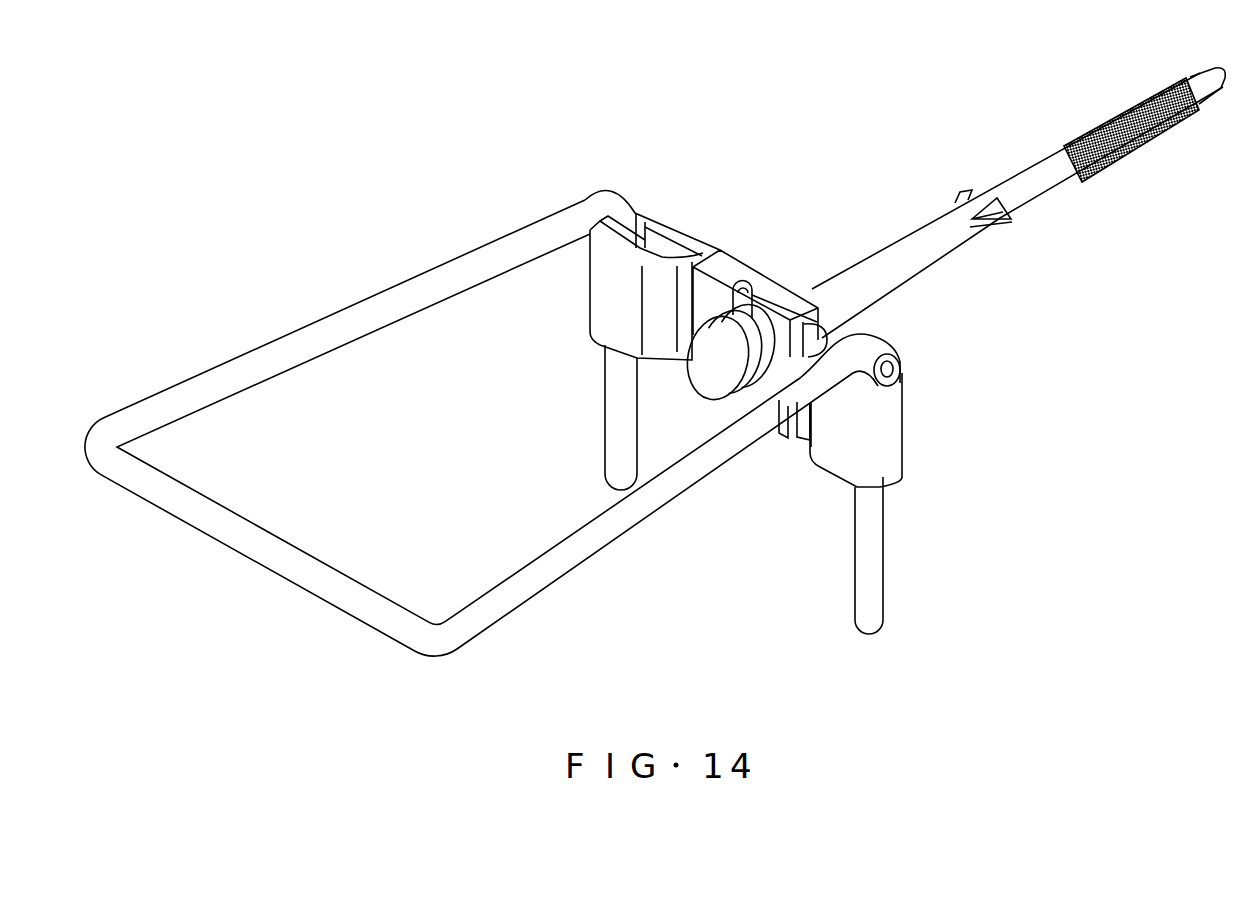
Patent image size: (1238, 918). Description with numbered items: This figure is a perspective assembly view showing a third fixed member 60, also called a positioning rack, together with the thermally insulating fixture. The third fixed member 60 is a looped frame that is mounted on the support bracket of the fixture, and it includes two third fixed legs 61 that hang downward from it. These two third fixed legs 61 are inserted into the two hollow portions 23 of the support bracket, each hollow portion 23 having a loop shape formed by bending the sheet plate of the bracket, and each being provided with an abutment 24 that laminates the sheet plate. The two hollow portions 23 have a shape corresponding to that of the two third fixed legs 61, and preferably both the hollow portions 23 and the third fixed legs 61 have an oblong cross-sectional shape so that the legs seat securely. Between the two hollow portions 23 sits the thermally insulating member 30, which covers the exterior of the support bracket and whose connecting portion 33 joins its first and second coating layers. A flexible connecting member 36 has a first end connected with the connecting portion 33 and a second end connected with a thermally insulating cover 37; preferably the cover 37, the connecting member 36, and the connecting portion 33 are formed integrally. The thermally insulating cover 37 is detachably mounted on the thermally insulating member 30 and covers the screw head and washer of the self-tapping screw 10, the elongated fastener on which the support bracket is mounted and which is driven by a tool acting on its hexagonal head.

The self-tapping screw 10 is at (1005, 194).
The hollow portion 23 is at (647, 242).
The abutment 24 is at (692, 263).
The thermally insulating member 30 is at (740, 349).
The connecting portion 33 is at (787, 300).
The connecting member 36 is at (740, 270).
The thermally insulating cover 37 is at (712, 365).
The third fixed member 60 is at (272, 548).
The third fixed leg 61 is at (606, 411).